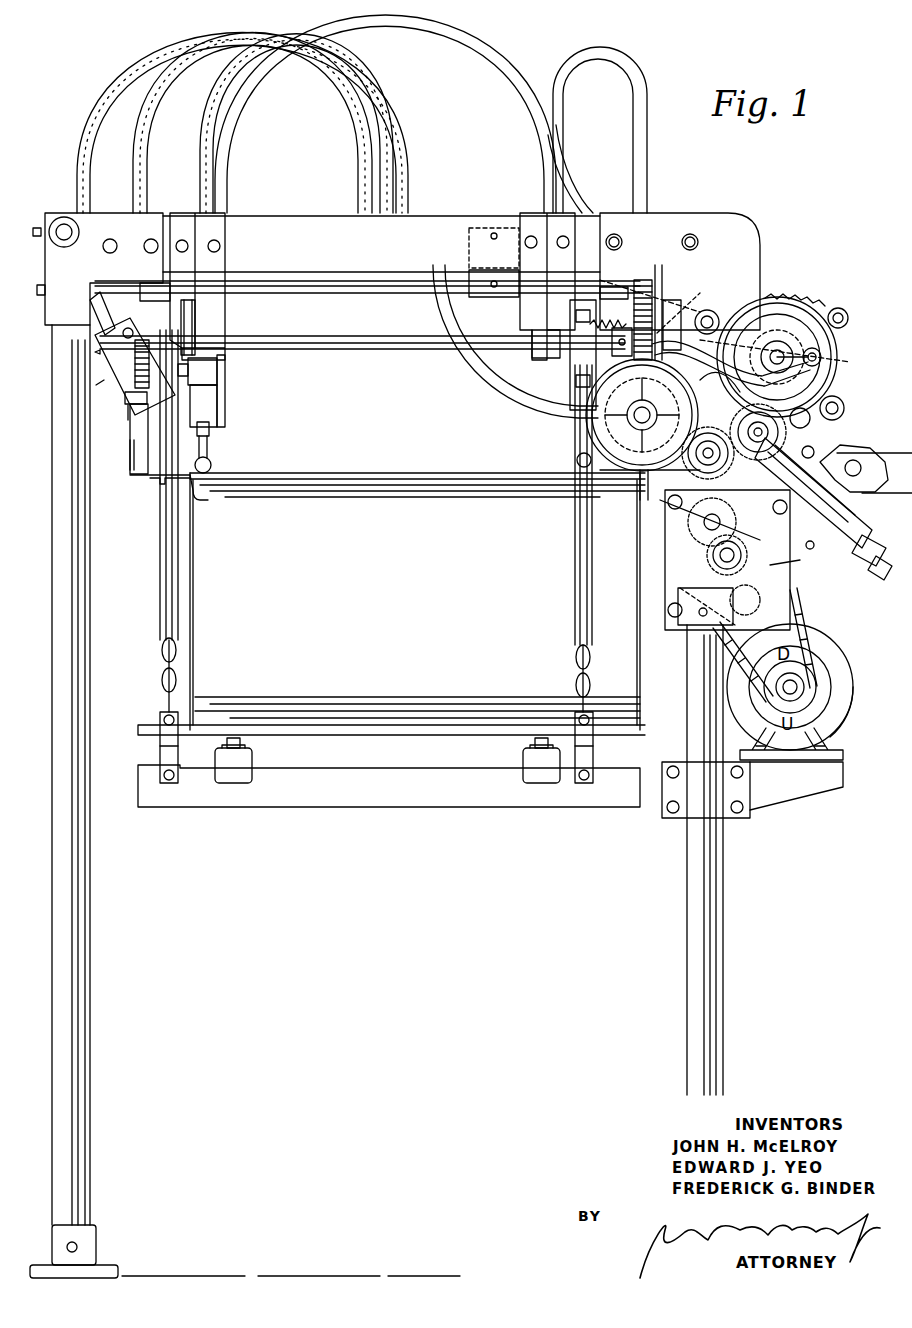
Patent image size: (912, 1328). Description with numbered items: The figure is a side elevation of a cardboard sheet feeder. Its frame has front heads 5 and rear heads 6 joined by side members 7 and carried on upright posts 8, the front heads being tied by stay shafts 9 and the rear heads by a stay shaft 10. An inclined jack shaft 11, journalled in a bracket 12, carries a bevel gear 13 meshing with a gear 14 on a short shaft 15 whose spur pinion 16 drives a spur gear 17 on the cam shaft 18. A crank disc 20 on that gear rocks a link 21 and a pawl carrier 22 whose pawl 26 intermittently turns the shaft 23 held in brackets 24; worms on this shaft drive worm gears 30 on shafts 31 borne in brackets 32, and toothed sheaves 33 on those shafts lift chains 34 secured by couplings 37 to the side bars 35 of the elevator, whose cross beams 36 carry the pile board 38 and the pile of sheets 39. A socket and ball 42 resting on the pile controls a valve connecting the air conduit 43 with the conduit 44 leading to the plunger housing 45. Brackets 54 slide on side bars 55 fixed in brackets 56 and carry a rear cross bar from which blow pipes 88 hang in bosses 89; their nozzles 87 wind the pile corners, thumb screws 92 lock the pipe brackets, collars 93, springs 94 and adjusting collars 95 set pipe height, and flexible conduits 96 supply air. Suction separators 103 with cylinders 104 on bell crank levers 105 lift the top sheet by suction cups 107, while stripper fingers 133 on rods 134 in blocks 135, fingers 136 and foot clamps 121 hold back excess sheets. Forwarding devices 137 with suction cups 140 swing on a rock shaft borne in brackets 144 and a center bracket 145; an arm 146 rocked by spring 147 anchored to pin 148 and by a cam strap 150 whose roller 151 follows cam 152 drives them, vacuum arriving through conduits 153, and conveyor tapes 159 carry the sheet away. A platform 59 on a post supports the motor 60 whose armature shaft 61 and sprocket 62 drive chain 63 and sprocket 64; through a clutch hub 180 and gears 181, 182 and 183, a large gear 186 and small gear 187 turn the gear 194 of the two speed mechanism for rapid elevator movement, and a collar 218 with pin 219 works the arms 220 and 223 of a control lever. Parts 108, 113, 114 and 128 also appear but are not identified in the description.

The front heads 5 is at (714, 212).
The rear heads 6 is at (48, 262).
The side members 7 is at (270, 228).
The upright posts or standards 8 is at (58, 636).
The stay shafts 9 is at (713, 314).
The stay shaft 10 is at (62, 228).
The jack shaft 11 is at (872, 572).
The bracket 12 is at (838, 460).
The bevel gear 13 is at (815, 444).
The bevel gear 14 is at (786, 430).
The short shaft 15 is at (725, 387).
The spur pinion 16 is at (806, 411).
The spur gear 17 is at (795, 291).
The cam shaft 18 is at (792, 380).
The crank disc 20 is at (820, 322).
The link 21 is at (822, 352).
The pawl carrier 22 is at (731, 363).
The shaft 23 is at (642, 415).
The brackets 24 is at (672, 300).
The pawl 26 is at (708, 426).
The worm gears 30 is at (646, 278).
The shafts 31 is at (390, 330).
The brackets 32 is at (222, 256).
The toothed sheaves 33 is at (182, 315).
The chains 34 is at (160, 660).
The side bars 35 is at (420, 755).
The cross beams 36 is at (250, 760).
The couplings or connections 37 is at (158, 756).
The pile board 38 is at (375, 734).
The pile of sheets 39 is at (417, 601).
The socket and ball 42 is at (212, 465).
The flexible conduit 43 is at (491, 55).
The flexible conduit 44 is at (482, 376).
The plunger housing 45 is at (637, 415).
The brackets 54 is at (157, 275).
The side bars 55 is at (352, 268).
The brackets 56 is at (499, 302).
The platform 59 is at (780, 790).
The electric motor 60 is at (838, 656).
The armature shaft 61 is at (800, 688).
The sprocket 62 is at (768, 668).
The chain 63 is at (790, 610).
The sprocket 64 is at (745, 605).
The nozzles 87 is at (205, 500).
The blow pipes 88 is at (142, 450).
The bosses 89 is at (126, 328).
The thumb screws 92 is at (118, 342).
The locking and adjusting collars 93 is at (95, 305).
The springs 94 is at (132, 386).
The adjusting collars 95 is at (138, 402).
The flexible conduits 96 is at (152, 102).
The suction sheet separating devices 103 is at (226, 388).
The cylinder 104 is at (204, 402).
The bell crank lever 105 is at (200, 370).
The rubber suction cup 107 is at (210, 450).
The hose 108 is at (214, 199).
The screw 113 is at (94, 352).
The stop 114 is at (100, 378).
The foot clamps 121 is at (156, 480).
The hose 128 is at (112, 97).
The flexible stripper fingers 133 is at (140, 476).
The rods 134 is at (134, 463).
The blocks 135 is at (130, 420).
The fingers 136 is at (212, 428).
The suction forwarding devices 137 is at (568, 397).
The rubber suction cup 140 is at (576, 460).
The brackets 144 is at (609, 314).
The center bracket 145 is at (652, 285).
The arm 146 is at (616, 316).
The spring 147 is at (684, 305).
The pin 148 is at (777, 351).
The cam strap 150 is at (777, 347).
The roller 151 is at (767, 376).
The cam 152 is at (835, 370).
The flexible conduits 153 is at (556, 160).
The conveyor tapes 159 is at (833, 493).
The hub 180 is at (713, 556).
The spur gear 181 is at (708, 604).
The spur gear 182 is at (676, 556).
The spur gear 183 is at (726, 522).
The large spur gear 186 is at (672, 502).
The small spur gear 187 is at (709, 438).
The gear 194 is at (600, 476).
The collar 218 is at (825, 545).
The pin 219 is at (799, 563).
The arm 220 is at (742, 555).
The arm 223 is at (640, 500).